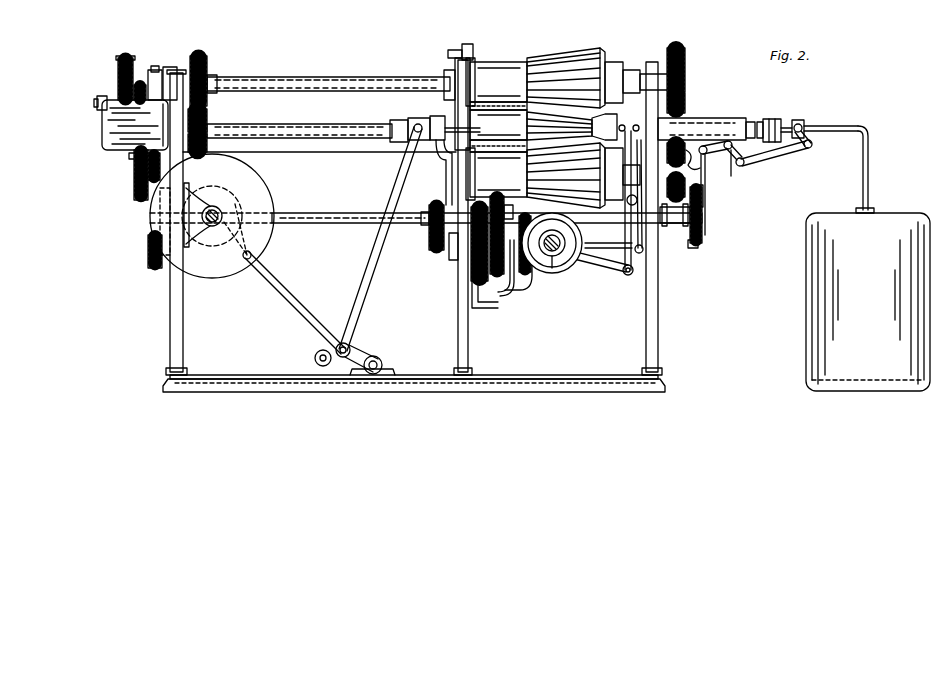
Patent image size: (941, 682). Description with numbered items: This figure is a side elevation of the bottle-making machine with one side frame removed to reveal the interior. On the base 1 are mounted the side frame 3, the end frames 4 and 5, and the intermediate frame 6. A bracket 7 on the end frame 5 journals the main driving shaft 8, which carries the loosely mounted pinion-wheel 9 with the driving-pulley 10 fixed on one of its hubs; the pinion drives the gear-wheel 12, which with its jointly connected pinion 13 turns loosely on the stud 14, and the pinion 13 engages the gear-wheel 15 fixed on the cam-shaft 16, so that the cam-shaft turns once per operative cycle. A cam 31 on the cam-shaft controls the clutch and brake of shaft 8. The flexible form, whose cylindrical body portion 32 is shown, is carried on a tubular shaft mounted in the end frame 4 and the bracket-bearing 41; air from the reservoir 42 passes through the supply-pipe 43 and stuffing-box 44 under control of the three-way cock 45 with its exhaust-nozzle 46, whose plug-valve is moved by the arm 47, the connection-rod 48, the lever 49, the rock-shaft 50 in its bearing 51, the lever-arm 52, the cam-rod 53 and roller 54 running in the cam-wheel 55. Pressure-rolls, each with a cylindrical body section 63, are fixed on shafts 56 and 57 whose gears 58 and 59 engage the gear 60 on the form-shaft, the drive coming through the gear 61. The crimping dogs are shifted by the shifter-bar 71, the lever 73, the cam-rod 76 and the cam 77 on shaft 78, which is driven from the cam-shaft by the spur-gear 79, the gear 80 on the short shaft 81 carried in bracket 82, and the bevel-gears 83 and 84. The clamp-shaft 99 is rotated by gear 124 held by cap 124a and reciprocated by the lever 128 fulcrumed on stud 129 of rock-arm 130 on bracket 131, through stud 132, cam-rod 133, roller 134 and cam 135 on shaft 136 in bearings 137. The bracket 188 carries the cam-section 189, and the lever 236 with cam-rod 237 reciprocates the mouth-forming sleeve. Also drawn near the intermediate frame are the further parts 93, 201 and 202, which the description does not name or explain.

The base 1 is at (552, 378).
The side frame 3 is at (368, 154).
The end frame 4 is at (658, 327).
The end frame 5 is at (170, 331).
The intermediate frame 6 is at (468, 335).
The bracket 7 is at (103, 135).
The main driving shaft 8 is at (94, 102).
The pinion-wheel 9 is at (140, 84).
The driving-pulley 10 is at (125, 56).
The gear-wheel 12 is at (133, 193).
The pinion 13 is at (148, 167).
The stud 14 is at (128, 156).
The gear-wheel 15 is at (148, 250).
The cam-shaft 16 is at (322, 213).
The cam 31 is at (168, 256).
The cylindrical body portion 32 is at (510, 132).
The bracket-bearing 41 is at (727, 118).
The reservoir 42 is at (868, 302).
The supply-pipe 43 is at (846, 125).
The stuffing-box 44 is at (773, 118).
The three-way cock 45 is at (803, 122).
The exhaust-nozzle 46 is at (798, 122).
The arm 47 is at (812, 142).
The connection-rod 48 is at (778, 156).
The lever 49 is at (740, 166).
The rock-shaft 50 is at (707, 190).
The bearing 51 is at (733, 145).
The lever-arm 52 is at (712, 153).
The cam-rod 53 is at (703, 190).
The roller 54 is at (702, 205).
The cam-wheel 55 is at (693, 248).
The upper roll-shaft 56 is at (380, 73).
The lower roll-shaft 57 is at (688, 165).
The gear 58 is at (682, 58).
The gear 59 is at (675, 224).
The gear 60 is at (685, 112).
The gear 61 is at (207, 58).
The body section 63 is at (512, 89).
The shifter-bar 71 is at (630, 113).
The lever 73 is at (634, 268).
The cam-rod 76 is at (612, 260).
The cam 77 is at (570, 266).
The shaft 78 is at (556, 253).
The spur-gear 79 is at (505, 205).
The gear 80 is at (506, 248).
The short shaft 81 is at (452, 258).
The bracket 82 is at (520, 280).
The bevel-gear 83 is at (526, 273).
The bevel-gear 84 is at (552, 258).
The gear 93 is at (470, 276).
The clamp-shaft 99 is at (322, 125).
The gear 124 is at (207, 145).
The cap 124a is at (207, 113).
The lever 128 is at (366, 262).
The stud 129 is at (315, 356).
The rock-arm 130 is at (356, 358).
The bracket 131 is at (383, 364).
The stud 132 is at (349, 346).
The cam-rod 133 is at (285, 294).
The roller 134 is at (252, 256).
The cam 135 is at (255, 250).
The shaft 136 is at (213, 226).
The bearings 137 is at (212, 206).
The bracket 188 is at (472, 57).
The cam-section 189 is at (464, 45).
The bracket 201 is at (447, 172).
The gear 202 is at (430, 242).
The lever 236 is at (642, 250).
The cam-rod 237 is at (614, 246).